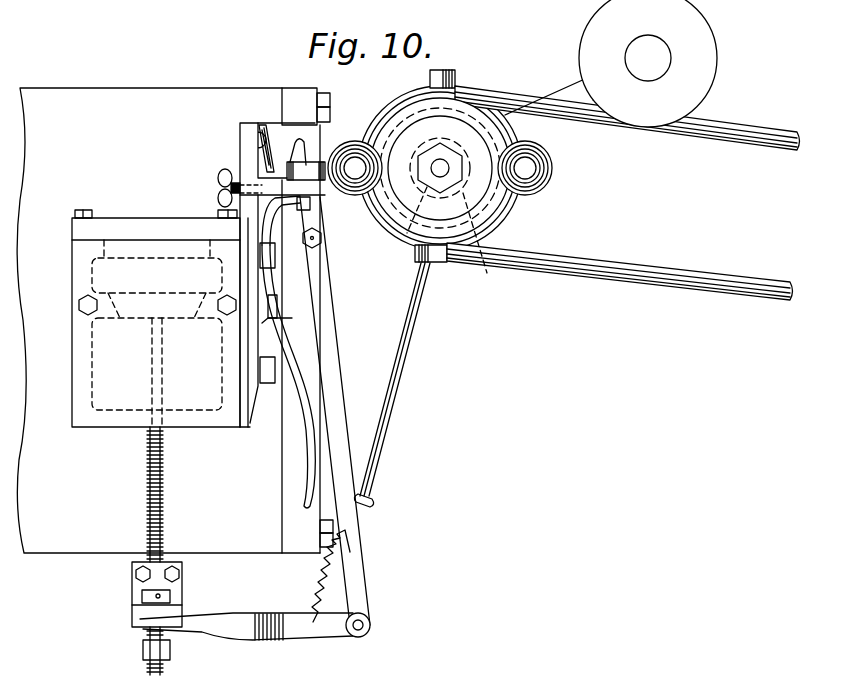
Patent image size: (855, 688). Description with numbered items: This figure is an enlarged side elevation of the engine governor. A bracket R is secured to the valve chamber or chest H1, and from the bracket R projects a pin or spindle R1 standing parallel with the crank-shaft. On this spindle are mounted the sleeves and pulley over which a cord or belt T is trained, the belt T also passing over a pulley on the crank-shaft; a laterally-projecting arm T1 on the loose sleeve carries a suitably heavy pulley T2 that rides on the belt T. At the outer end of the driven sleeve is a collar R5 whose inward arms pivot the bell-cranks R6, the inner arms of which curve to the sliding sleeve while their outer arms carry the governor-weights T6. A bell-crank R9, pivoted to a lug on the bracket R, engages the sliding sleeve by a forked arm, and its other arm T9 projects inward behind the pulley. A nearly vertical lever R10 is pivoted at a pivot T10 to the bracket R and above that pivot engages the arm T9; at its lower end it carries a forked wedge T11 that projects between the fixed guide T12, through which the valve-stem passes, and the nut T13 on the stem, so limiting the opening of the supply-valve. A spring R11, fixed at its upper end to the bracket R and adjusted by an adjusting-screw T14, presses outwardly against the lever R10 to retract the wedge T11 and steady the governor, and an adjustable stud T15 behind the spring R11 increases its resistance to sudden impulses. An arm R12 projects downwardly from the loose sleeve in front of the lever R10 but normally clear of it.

The bracket R is at (312, 135).
The pin or spindle R1 is at (446, 132).
The collar R5 is at (470, 205).
The bell-cranks R6 is at (557, 223).
The bell-crank R9 is at (287, 170).
The lever R10 is at (326, 353).
The spring R11 is at (293, 299).
The arm R12 is at (405, 369).
The cord or belt T is at (713, 142).
The laterally-projecting arm T1 is at (568, 95).
The heavy pulley T2 is at (703, 78).
The governor-weights T6 is at (440, 168).
The arm of bell-crank T9 is at (287, 165).
The pivot T10 is at (323, 239).
The forked wedge T11 is at (232, 624).
The fixed guide T12 is at (140, 613).
The nut T13 is at (143, 653).
The adjusting-screw T14 is at (220, 188).
The adjustable stud T15 is at (277, 331).
The valve chamber or chest H1 is at (160, 318).